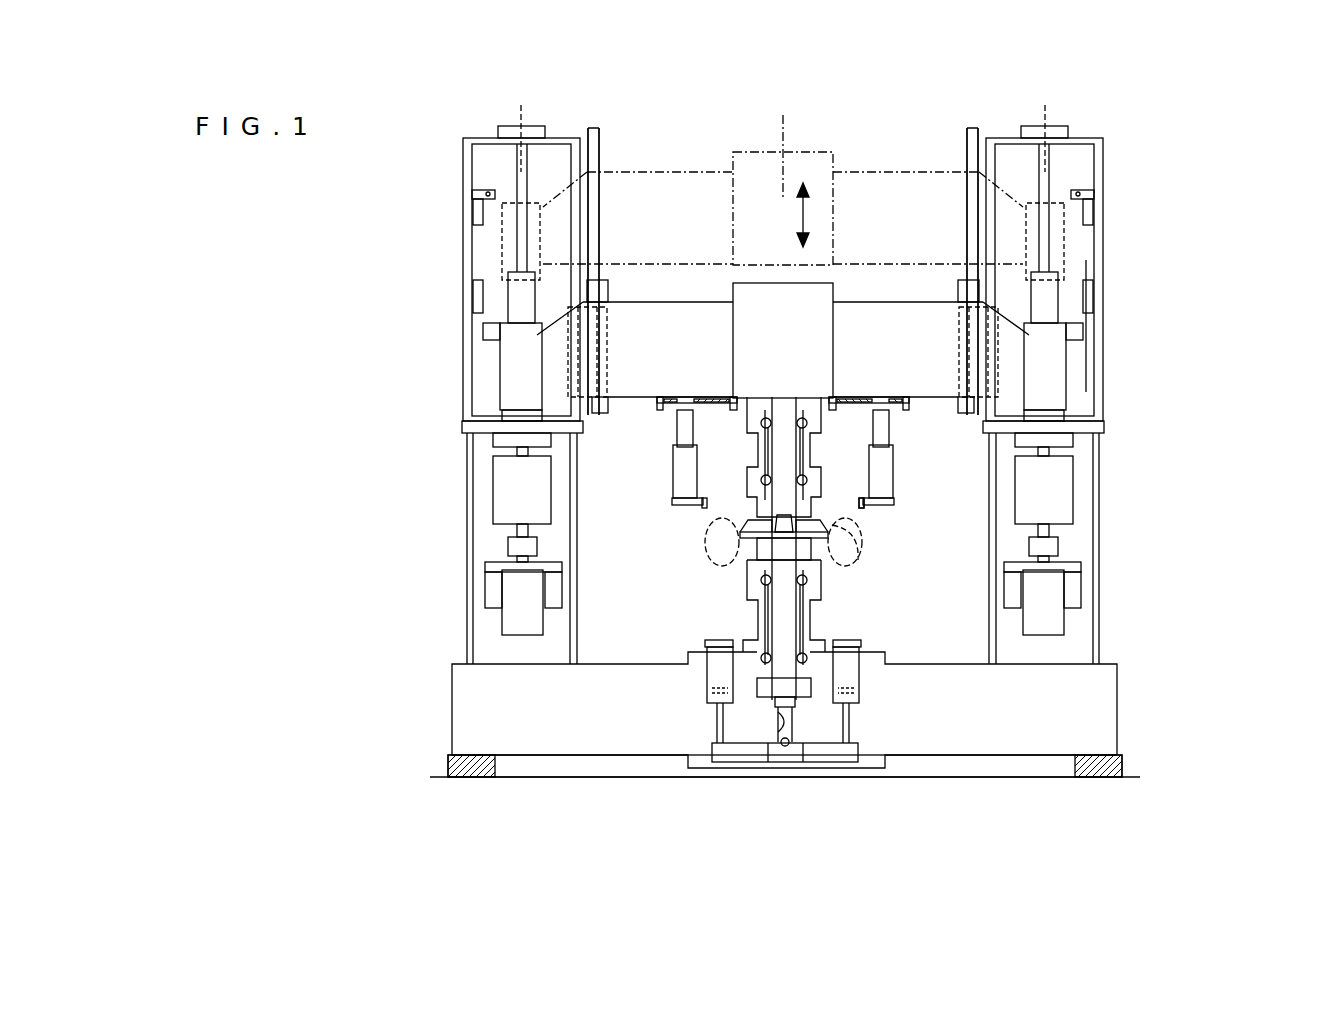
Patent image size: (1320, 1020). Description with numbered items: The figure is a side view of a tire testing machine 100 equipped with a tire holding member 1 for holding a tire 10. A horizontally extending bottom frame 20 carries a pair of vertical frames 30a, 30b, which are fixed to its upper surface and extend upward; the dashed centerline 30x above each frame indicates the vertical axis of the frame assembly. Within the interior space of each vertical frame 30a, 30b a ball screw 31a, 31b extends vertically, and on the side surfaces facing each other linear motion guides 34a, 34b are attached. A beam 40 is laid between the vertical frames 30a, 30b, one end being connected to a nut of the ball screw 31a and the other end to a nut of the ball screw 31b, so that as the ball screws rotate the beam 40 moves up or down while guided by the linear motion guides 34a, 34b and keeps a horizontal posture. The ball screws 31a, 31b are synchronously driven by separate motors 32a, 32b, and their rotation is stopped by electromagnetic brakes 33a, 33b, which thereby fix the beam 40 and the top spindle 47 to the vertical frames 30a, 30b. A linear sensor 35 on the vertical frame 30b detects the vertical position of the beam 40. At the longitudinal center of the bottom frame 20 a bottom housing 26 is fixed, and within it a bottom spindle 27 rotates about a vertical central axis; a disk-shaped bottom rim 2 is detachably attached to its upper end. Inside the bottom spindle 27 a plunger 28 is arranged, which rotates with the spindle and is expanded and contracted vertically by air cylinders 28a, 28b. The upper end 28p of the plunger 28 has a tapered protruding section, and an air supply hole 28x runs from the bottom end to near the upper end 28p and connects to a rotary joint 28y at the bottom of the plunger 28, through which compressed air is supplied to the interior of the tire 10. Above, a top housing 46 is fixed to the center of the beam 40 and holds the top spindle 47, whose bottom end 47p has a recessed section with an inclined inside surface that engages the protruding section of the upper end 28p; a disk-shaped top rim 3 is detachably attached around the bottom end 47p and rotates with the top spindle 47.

The tire testing machine 100 is at (1217, 146).
The tire holding member 1 is at (793, 553).
The bottom rim 2 is at (752, 552).
The top rim 3 is at (858, 558).
The tire 10 is at (852, 566).
The bottom frame 20 is at (937, 672).
The bottom housing 26 is at (760, 617).
The bottom spindle 27 is at (755, 578).
The plunger 28 is at (719, 504).
The air cylinder 28a is at (717, 718).
The air cylinder 28b is at (853, 716).
The upper end of the plunger 28p is at (752, 519).
The air supply hole 28x is at (785, 745).
The rotary joint 28y is at (788, 746).
The vertical frame 30a is at (529, 372).
The vertical frame 30b is at (1035, 372).
The column axis 30x is at (523, 94).
The ball screw 31a is at (522, 182).
The ball screw 31b is at (1047, 182).
The motor 32a is at (510, 622).
The motor 32b is at (1060, 617).
The electromagnetic brake 33a is at (515, 490).
The electromagnetic brake 33b is at (1058, 484).
The linear motion guide 34a is at (598, 143).
The linear motion guide 34b is at (968, 143).
The linear sensor 35 is at (1088, 322).
The beam 40 is at (695, 317).
The top housing 46 is at (760, 445).
The top spindle 47 is at (870, 459).
The bottom end of the top spindle 47p is at (862, 510).